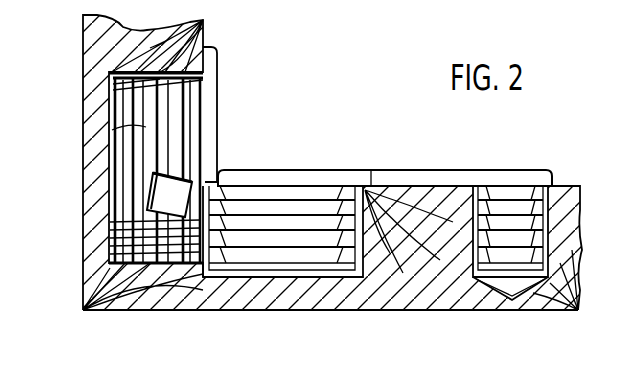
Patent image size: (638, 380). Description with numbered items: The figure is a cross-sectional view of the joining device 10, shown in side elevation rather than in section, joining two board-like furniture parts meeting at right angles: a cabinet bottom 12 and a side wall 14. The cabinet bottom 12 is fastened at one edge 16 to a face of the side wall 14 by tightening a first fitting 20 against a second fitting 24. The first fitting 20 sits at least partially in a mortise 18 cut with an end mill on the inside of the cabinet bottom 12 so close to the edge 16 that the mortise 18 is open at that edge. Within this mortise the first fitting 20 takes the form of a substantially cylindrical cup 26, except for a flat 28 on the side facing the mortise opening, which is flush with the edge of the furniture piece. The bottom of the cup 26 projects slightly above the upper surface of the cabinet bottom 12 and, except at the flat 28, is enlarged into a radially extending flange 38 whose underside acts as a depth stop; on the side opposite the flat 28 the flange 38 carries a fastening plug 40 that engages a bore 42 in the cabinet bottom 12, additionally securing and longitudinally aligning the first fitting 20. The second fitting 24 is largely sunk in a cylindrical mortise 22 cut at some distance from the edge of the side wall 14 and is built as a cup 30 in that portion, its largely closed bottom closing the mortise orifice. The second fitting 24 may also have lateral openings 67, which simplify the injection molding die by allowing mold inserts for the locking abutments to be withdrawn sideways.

The joining device 10 is at (337, 117).
The cabinet bottom 12 is at (545, 303).
The side wall 14 is at (99, 50).
The edge 16 is at (181, 302).
The mortise 18 is at (350, 306).
The first fitting 20 is at (393, 171).
The mortise 22 is at (112, 262).
The second fitting 24 is at (217, 69).
The cup 26 is at (277, 248).
The flat 28 is at (198, 187).
The cup 30 is at (148, 134).
The flange 38 is at (446, 181).
The fastening plug 40 is at (513, 207).
The bore 42 is at (474, 282).
The lateral openings 67 is at (168, 198).